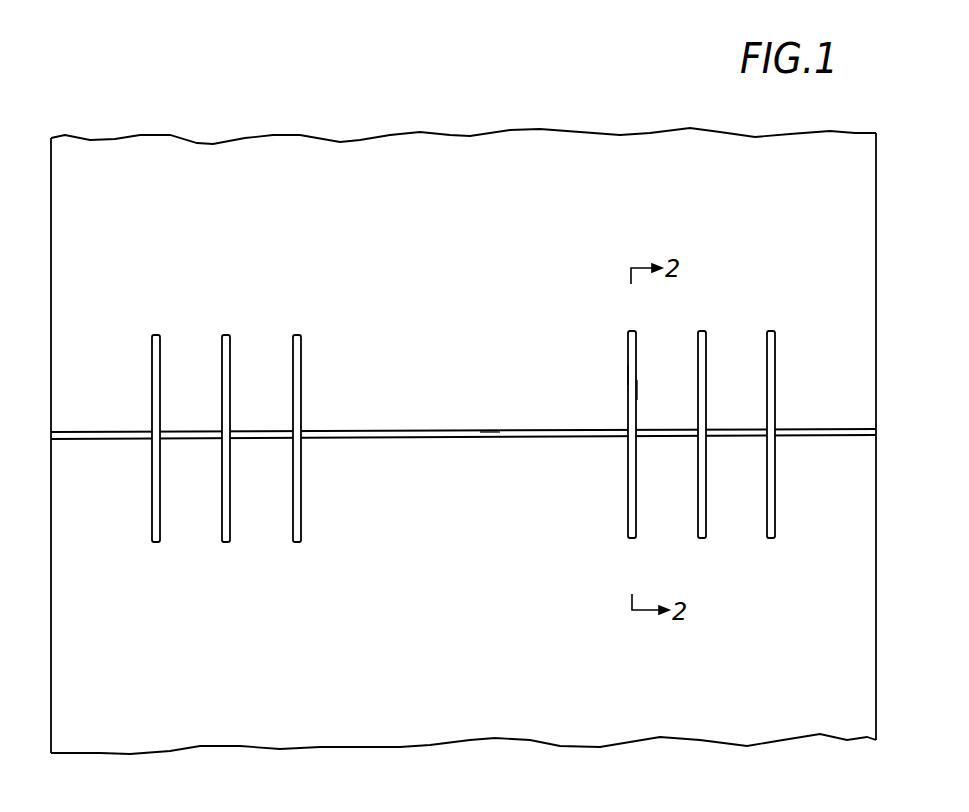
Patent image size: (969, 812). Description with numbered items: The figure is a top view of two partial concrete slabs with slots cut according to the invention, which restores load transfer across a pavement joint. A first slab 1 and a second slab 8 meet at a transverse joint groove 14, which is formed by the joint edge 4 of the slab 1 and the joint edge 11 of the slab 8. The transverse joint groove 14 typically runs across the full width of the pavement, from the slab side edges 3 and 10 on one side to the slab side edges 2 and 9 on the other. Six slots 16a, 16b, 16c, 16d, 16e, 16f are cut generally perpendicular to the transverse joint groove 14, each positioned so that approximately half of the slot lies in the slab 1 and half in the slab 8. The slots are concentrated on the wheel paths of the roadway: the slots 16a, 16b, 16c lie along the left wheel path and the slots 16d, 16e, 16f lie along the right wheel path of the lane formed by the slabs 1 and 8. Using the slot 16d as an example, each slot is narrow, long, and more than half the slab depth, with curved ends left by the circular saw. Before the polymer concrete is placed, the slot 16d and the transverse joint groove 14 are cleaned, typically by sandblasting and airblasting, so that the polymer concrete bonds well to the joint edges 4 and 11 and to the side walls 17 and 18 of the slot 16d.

The slab 1 is at (858, 238).
The slab side edge 2 is at (877, 333).
The slab side edge 3 is at (51, 250).
The joint edge 4 is at (431, 430).
The slab 8 is at (852, 527).
The slab side edge 9 is at (876, 605).
The slab side edge 10 is at (53, 600).
The joint edge 11 is at (392, 440).
The transverse joint groove 14 is at (490, 437).
The slot 16a is at (155, 333).
The slot 16b is at (224, 333).
The slot 16c is at (298, 333).
The slot 16d is at (636, 340).
The slot 16e is at (706, 345).
The slot 16f is at (775, 345).
The side wall 17 is at (638, 390).
The side wall 18 is at (627, 375).